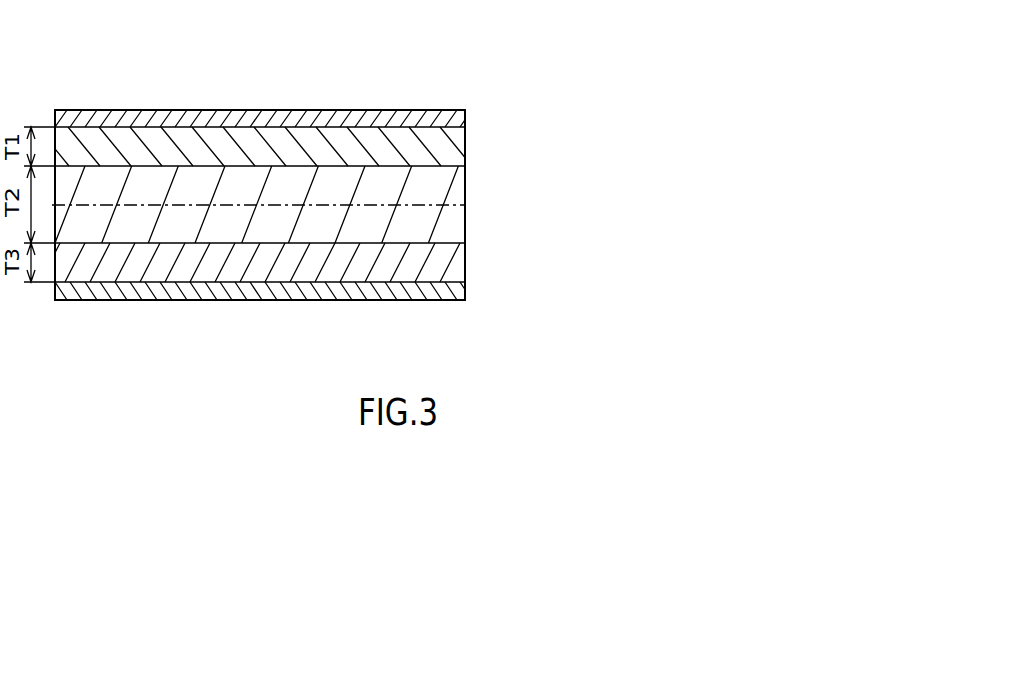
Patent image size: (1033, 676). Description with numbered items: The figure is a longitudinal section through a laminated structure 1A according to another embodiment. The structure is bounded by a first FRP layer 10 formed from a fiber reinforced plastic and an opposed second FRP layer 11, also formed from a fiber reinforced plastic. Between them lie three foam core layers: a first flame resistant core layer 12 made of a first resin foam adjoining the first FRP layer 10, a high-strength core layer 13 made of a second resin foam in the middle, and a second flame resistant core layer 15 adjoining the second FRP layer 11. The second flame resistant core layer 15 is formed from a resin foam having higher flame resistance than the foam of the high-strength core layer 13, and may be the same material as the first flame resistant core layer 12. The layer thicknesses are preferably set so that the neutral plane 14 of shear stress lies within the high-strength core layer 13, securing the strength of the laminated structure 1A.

The laminated structure 1A is at (275, 82).
The first FRP layer 10 is at (465, 120).
The second FRP layer 11 is at (465, 290).
The first flame resistant core layer 12 is at (465, 148).
The high-strength core layer 13 is at (465, 210).
The neutral plane 14 is at (465, 205).
The second flame resistant core layer 15 is at (465, 262).